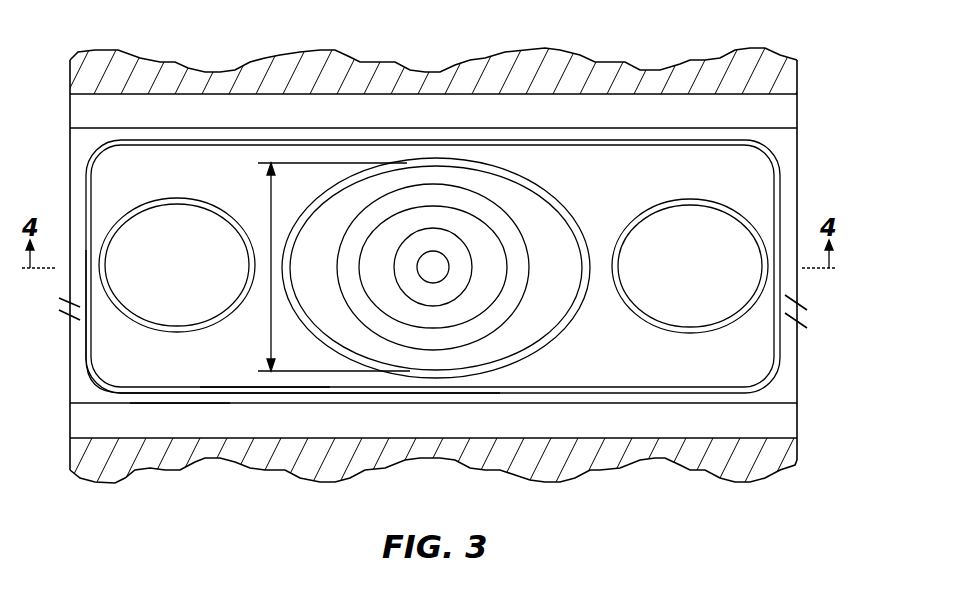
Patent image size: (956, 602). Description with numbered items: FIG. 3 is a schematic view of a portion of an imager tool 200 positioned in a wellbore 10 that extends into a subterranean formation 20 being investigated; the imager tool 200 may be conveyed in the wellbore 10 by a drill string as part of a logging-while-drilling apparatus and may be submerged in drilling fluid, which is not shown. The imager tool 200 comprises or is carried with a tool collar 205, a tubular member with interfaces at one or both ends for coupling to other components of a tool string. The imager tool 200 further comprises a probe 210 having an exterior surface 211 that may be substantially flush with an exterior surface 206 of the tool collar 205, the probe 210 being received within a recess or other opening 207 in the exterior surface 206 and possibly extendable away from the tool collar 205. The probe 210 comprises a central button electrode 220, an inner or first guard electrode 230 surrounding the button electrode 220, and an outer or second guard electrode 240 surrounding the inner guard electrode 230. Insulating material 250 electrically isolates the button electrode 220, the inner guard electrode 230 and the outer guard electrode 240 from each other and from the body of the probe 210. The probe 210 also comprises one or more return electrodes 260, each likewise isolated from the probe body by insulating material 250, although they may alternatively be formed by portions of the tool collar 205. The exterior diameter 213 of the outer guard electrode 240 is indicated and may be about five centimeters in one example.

The wellbore 10 is at (95, 112).
The subterranean formation 20 is at (108, 58).
The imager tool 200 is at (298, 108).
The tool collar 205 is at (165, 406).
The exterior surface 206 is at (93, 395).
The opening 207 is at (250, 395).
The probe 210 is at (433, 389).
The exterior surface 211 is at (337, 381).
The exterior diameter 213 is at (330, 267).
The button electrode 220 is at (450, 266).
The inner guard electrode 230 is at (487, 222).
The outer guard electrode 240 is at (532, 189).
The insulating material 250 is at (178, 198).
The return electrodes 260 is at (230, 206).